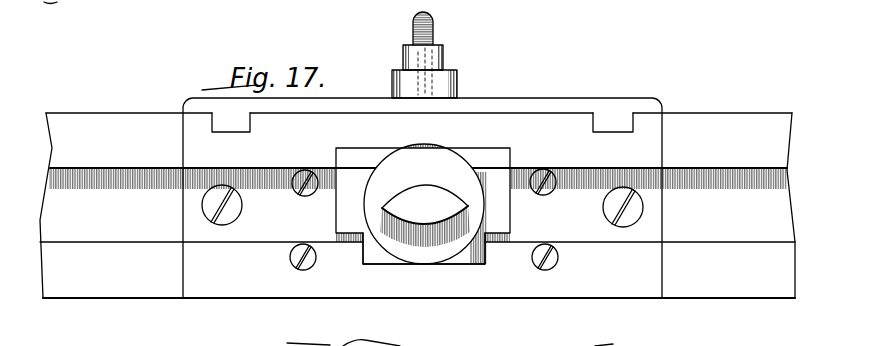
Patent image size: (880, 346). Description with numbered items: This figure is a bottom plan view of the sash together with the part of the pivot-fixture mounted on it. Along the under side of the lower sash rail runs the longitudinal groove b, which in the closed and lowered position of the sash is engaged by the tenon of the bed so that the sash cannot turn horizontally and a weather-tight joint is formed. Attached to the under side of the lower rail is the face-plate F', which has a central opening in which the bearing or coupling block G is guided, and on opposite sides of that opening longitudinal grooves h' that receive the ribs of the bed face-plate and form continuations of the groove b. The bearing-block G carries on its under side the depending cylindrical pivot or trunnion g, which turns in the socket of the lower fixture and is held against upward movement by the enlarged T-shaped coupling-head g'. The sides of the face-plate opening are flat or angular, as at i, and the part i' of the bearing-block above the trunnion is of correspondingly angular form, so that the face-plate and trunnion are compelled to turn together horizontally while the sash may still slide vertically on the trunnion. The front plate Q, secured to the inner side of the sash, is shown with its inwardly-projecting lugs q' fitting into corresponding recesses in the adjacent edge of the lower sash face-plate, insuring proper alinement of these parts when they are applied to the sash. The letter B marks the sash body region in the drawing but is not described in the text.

The longitudinal groove b is at (417, 205).
The bed B is at (780, 307).
The face-plate F' is at (418, 186).
The front plate Q is at (503, 101).
The inwardly-projecting lugs q' is at (422, 122).
The longitudinal grooves h' is at (422, 219).
The angular part of bearing-block i' is at (508, 218).
The cylindrical pivot or trunnion g is at (413, 206).
The bearing or coupling block G is at (423, 206).
The flat or angular sides of opening i is at (434, 258).
The T-shaped coupling-head g' is at (425, 225).